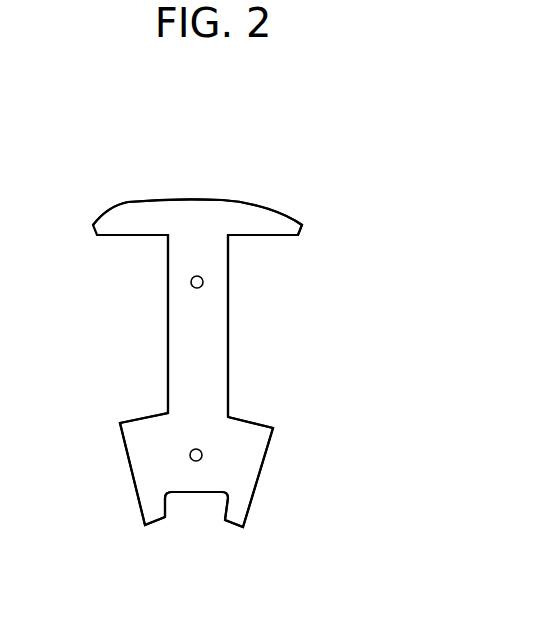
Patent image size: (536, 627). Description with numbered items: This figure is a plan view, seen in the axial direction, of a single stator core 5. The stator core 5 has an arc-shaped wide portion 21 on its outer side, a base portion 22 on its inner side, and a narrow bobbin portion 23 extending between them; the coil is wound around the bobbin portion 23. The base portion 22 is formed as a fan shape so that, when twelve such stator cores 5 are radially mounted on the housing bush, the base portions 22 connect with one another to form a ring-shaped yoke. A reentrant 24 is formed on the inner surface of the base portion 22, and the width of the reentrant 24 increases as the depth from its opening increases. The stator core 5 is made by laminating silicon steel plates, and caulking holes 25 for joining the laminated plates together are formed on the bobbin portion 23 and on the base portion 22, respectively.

The stator core 5 is at (167, 188).
The arc-shaped wide portion 21 is at (218, 220).
The base portion 22 is at (238, 465).
The bobbin portion 23 is at (213, 333).
The reentrant 24 is at (198, 492).
The caulking holes 25 is at (191, 282).